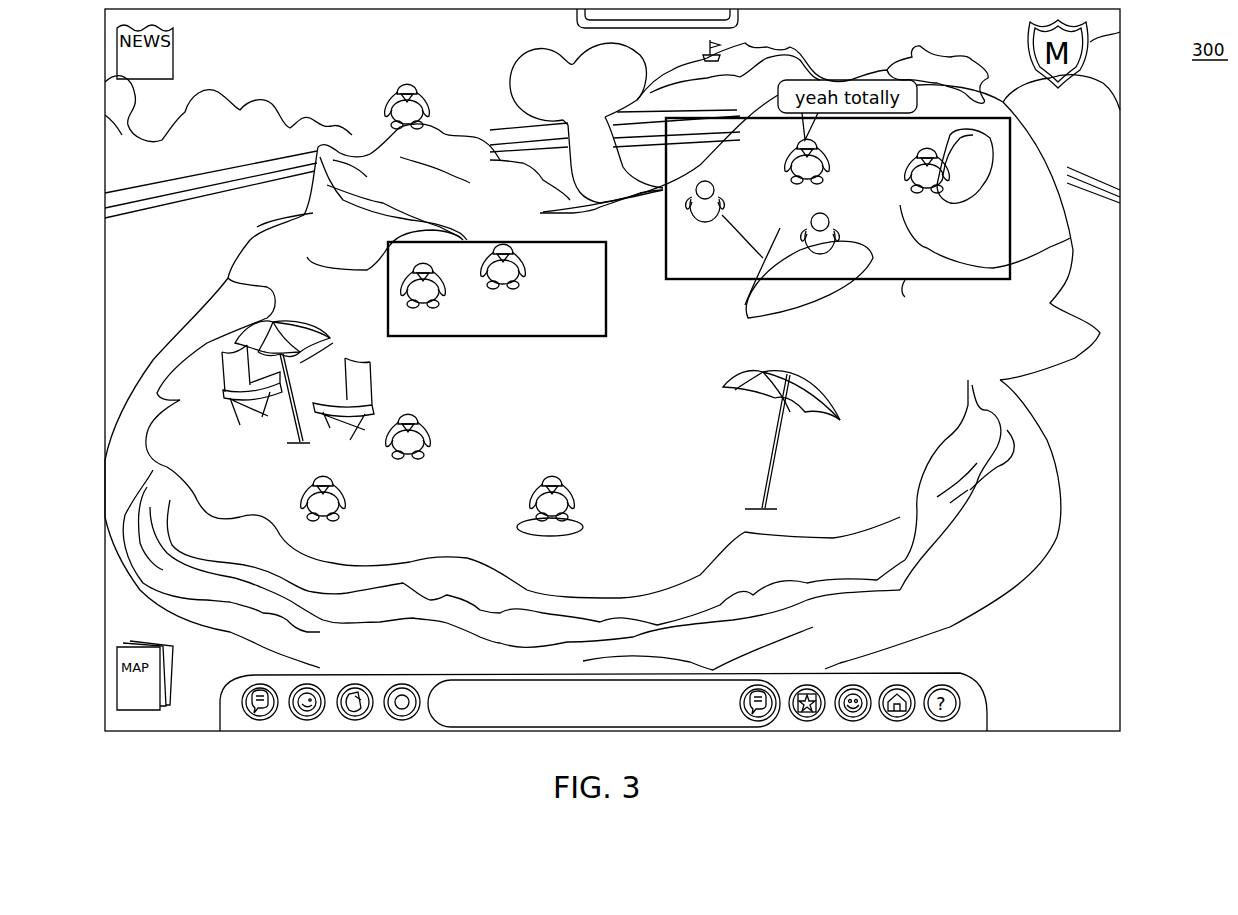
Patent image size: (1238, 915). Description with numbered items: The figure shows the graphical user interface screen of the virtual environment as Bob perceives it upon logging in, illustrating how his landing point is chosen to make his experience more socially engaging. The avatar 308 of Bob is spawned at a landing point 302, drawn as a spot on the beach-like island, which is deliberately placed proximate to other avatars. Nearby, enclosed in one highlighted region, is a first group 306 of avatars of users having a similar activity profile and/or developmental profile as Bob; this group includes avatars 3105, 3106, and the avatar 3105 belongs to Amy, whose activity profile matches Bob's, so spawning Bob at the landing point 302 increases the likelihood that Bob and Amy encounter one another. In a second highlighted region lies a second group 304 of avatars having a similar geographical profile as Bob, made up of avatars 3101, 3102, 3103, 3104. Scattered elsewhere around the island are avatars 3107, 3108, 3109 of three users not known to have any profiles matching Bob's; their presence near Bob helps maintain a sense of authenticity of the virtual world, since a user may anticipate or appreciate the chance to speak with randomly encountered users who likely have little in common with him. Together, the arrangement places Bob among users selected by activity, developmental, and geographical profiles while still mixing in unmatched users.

The landing point 302 is at (584, 522).
The second group 304 is at (850, 279).
The first group 306 is at (400, 340).
The avatar 308 is at (568, 488).
The avatar 3101 is at (817, 145).
The avatar 3102 is at (915, 197).
The avatar 3103 is at (853, 221).
The avatar 3104 is at (706, 222).
The avatar 3105 is at (446, 302).
The avatar 3106 is at (524, 284).
The avatar 3107 is at (347, 513).
The avatar 3108 is at (431, 452).
The avatar 3109 is at (432, 100).